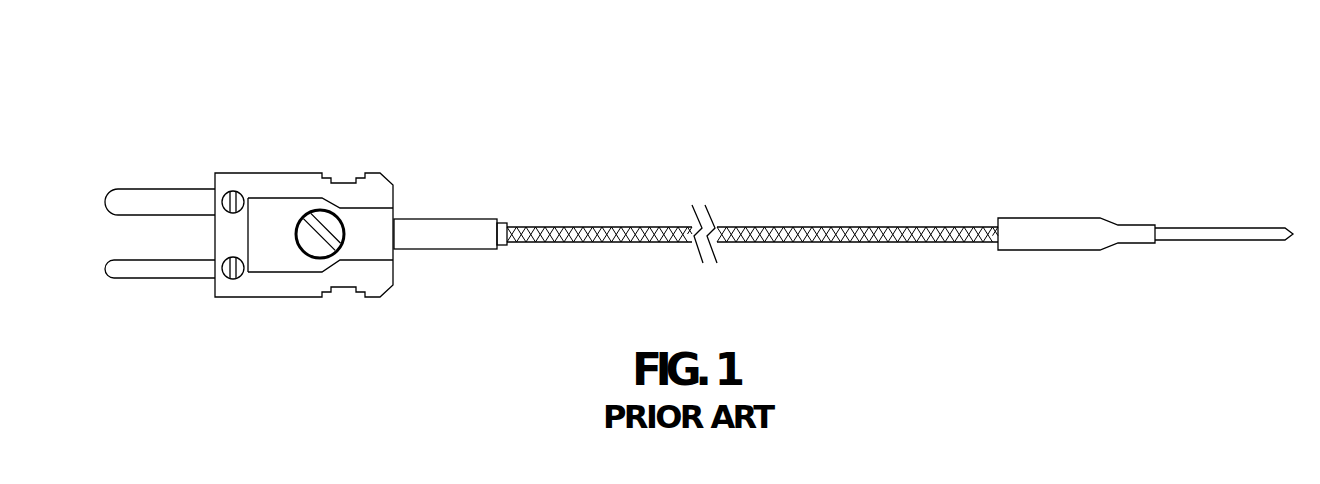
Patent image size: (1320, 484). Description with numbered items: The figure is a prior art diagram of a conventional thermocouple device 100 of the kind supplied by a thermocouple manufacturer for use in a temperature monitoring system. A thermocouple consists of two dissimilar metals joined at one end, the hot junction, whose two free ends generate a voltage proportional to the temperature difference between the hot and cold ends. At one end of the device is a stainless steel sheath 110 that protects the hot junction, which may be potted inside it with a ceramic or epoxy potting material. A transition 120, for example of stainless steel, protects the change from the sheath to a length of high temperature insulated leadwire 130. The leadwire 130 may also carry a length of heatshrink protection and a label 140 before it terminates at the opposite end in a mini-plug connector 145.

The thermocouple device 100 is at (291, 95).
The mini-plug connector 145 is at (247, 172).
The label 140 is at (475, 218).
The high temperature insulated leadwire 130 is at (837, 227).
The transition 120 is at (1045, 218).
The stainless steel sheath 110 is at (1227, 227).